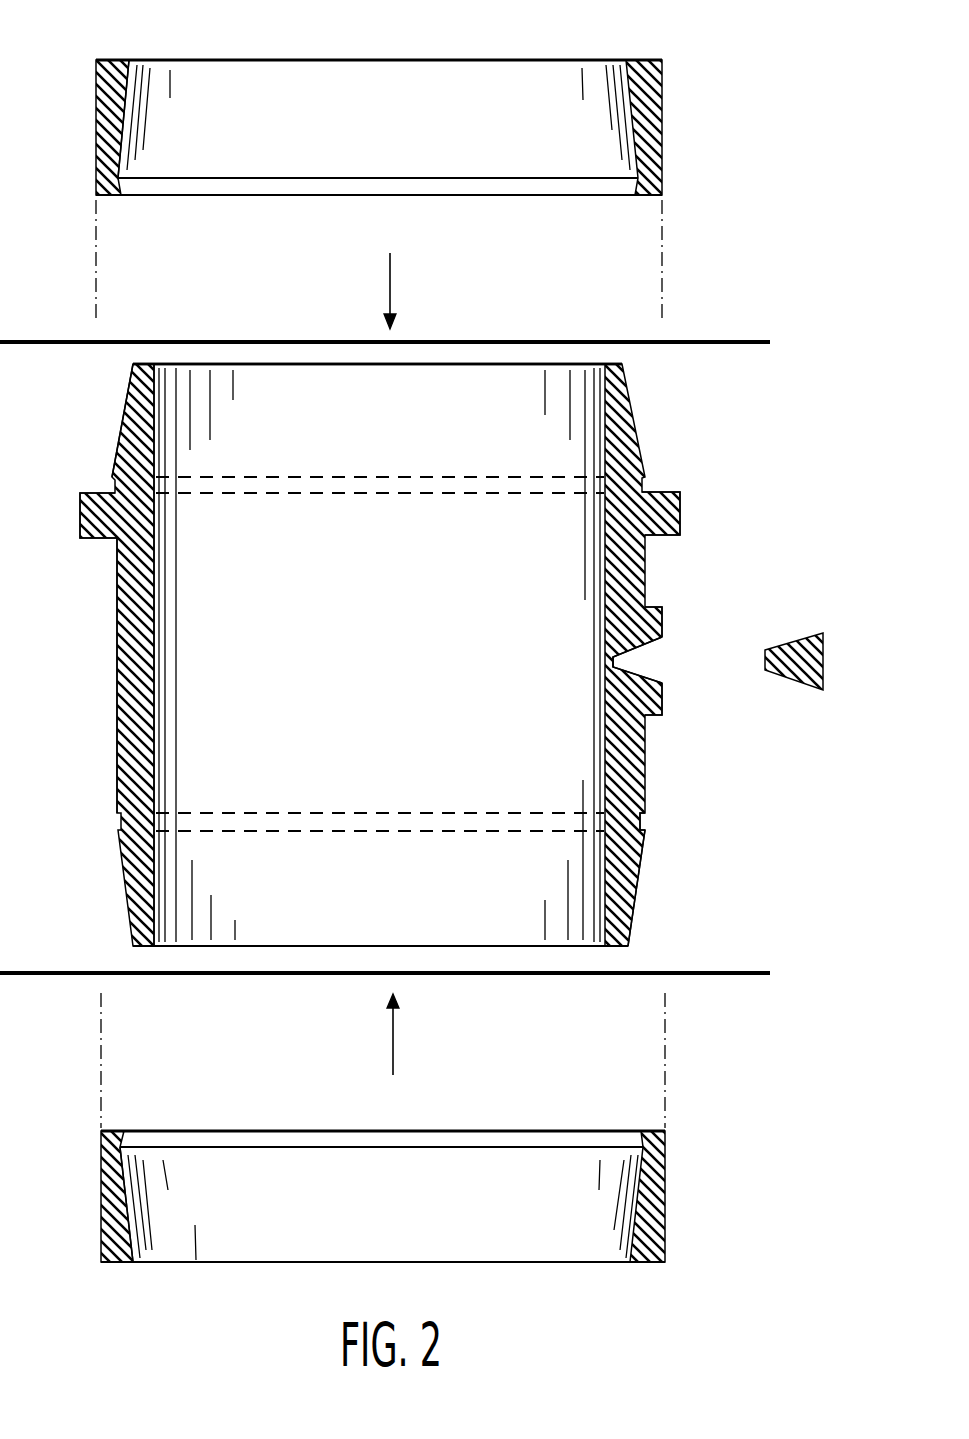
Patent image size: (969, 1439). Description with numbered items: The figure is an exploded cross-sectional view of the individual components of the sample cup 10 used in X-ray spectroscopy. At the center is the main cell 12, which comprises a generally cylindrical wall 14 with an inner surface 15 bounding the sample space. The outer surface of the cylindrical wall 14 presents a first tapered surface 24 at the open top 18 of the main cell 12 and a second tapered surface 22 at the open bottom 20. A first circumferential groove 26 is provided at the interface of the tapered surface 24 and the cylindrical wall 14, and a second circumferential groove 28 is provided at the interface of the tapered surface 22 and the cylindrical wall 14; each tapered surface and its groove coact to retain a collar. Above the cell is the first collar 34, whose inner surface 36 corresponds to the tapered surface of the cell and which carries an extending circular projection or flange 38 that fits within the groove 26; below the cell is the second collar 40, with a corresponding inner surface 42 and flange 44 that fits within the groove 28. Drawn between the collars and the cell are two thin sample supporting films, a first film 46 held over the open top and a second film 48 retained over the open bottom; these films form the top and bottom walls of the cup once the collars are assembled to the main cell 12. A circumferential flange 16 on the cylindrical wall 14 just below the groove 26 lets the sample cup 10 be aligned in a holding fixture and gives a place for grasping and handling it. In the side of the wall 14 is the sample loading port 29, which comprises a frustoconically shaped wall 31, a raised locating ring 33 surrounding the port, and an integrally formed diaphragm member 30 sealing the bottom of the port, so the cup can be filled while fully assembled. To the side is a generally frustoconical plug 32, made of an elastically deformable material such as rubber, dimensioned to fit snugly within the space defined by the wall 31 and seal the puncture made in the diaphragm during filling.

The sample cup 10 is at (681, 62).
The main cell component 12 is at (106, 659).
The cylindrical wall 14 is at (117, 740).
The inner surface 15 is at (187, 775).
The circumferential flange 16 is at (78, 518).
The open top 18 is at (578, 364).
The open bottom 20 is at (175, 948).
The second tapered surface 22 is at (640, 867).
The first tapered surface 24 is at (118, 413).
The first circumferential groove 26 is at (642, 485).
The second circumferential groove 28 is at (640, 823).
The sample loading port 29 is at (657, 663).
The diaphragm member 30 is at (612, 656).
The frustoconically shaped wall 31 is at (645, 678).
The plug 32 is at (800, 645).
The raised locating ring 33 is at (660, 625).
The first collar 34 is at (658, 100).
The inner surface of first collar 36 is at (125, 135).
The flange of first collar 38 is at (498, 187).
The second collar 40 is at (665, 1195).
The inner surface of second collar 42 is at (130, 1197).
The flange of second collar 44 is at (599, 1135).
The first sample supporting film 46 is at (698, 338).
The second sample supporting film 48 is at (715, 976).